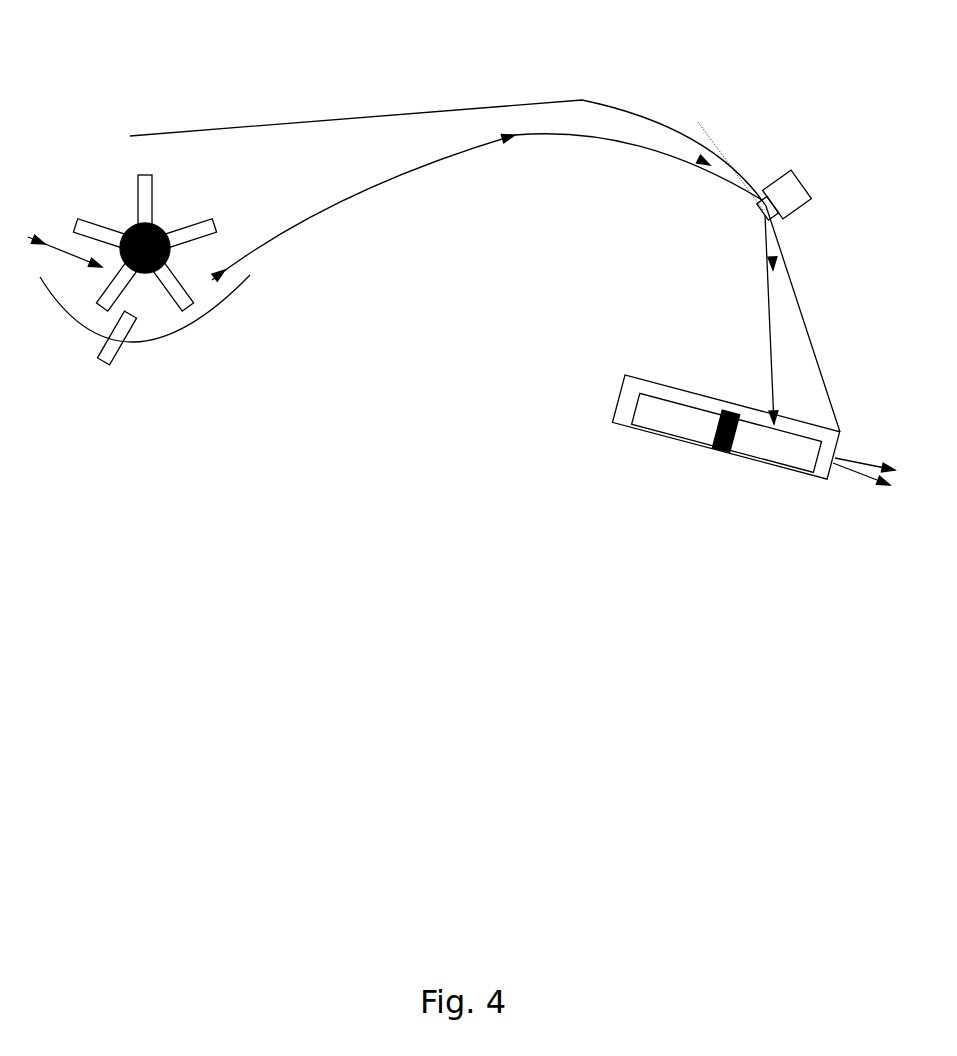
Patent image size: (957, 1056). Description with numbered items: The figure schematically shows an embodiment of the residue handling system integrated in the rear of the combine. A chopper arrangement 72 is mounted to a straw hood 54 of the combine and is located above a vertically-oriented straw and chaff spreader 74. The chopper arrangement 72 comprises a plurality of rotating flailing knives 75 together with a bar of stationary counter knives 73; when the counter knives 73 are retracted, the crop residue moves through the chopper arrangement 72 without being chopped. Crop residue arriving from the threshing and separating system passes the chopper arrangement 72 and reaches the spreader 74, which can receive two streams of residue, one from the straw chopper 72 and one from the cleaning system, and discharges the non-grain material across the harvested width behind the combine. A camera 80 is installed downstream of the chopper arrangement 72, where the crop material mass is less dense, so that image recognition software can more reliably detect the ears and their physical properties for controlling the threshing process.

The straw hood 54 is at (528, 105).
The chopper arrangement 72 is at (264, 341).
The stationary counter knives 73 is at (120, 355).
The straw and chaff spreader 74 is at (670, 433).
The rotating flailing knives 75 is at (138, 202).
The camera 80 is at (803, 188).